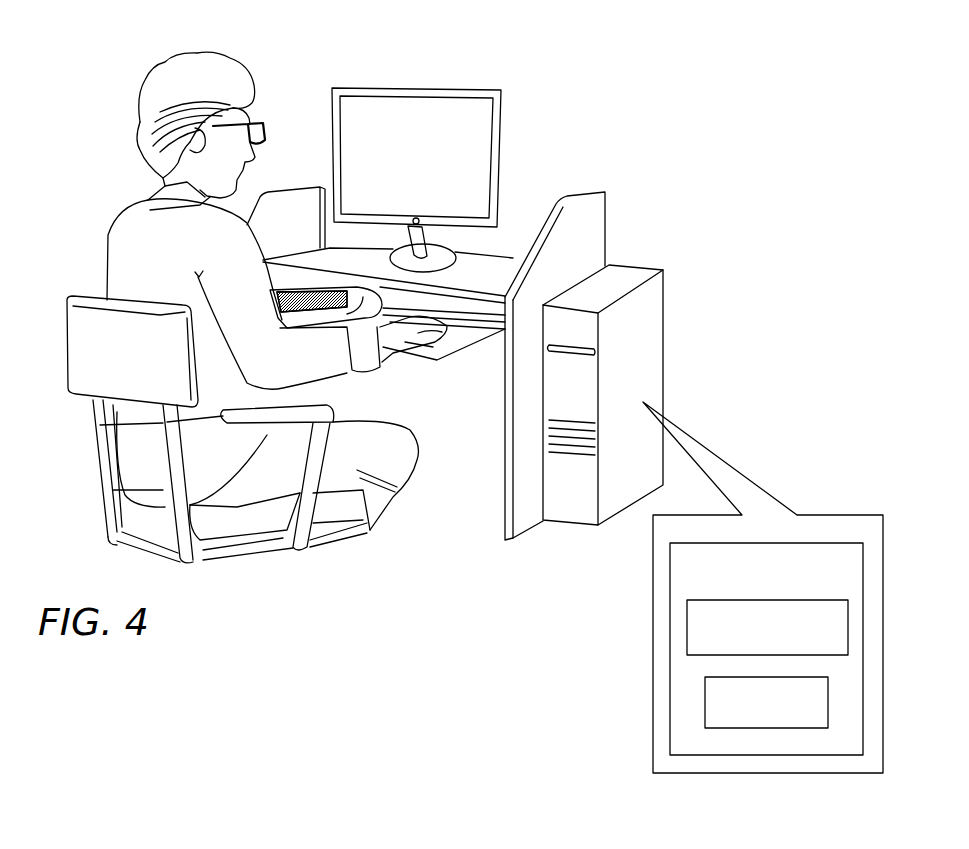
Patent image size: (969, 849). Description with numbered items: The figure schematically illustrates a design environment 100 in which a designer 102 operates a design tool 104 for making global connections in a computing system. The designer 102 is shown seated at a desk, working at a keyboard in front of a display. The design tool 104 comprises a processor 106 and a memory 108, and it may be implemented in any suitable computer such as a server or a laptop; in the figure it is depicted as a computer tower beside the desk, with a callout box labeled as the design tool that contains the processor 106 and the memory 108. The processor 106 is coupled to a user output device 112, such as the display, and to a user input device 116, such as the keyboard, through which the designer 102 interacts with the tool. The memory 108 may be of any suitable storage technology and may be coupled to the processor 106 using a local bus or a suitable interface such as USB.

The design environment 100 is at (594, 110).
The designer 102 is at (140, 125).
The design tool 104 is at (670, 745).
The processor 106 is at (687, 617).
The memory 108 is at (705, 696).
The user output device 112 is at (404, 88).
The user input device 116 is at (300, 290).